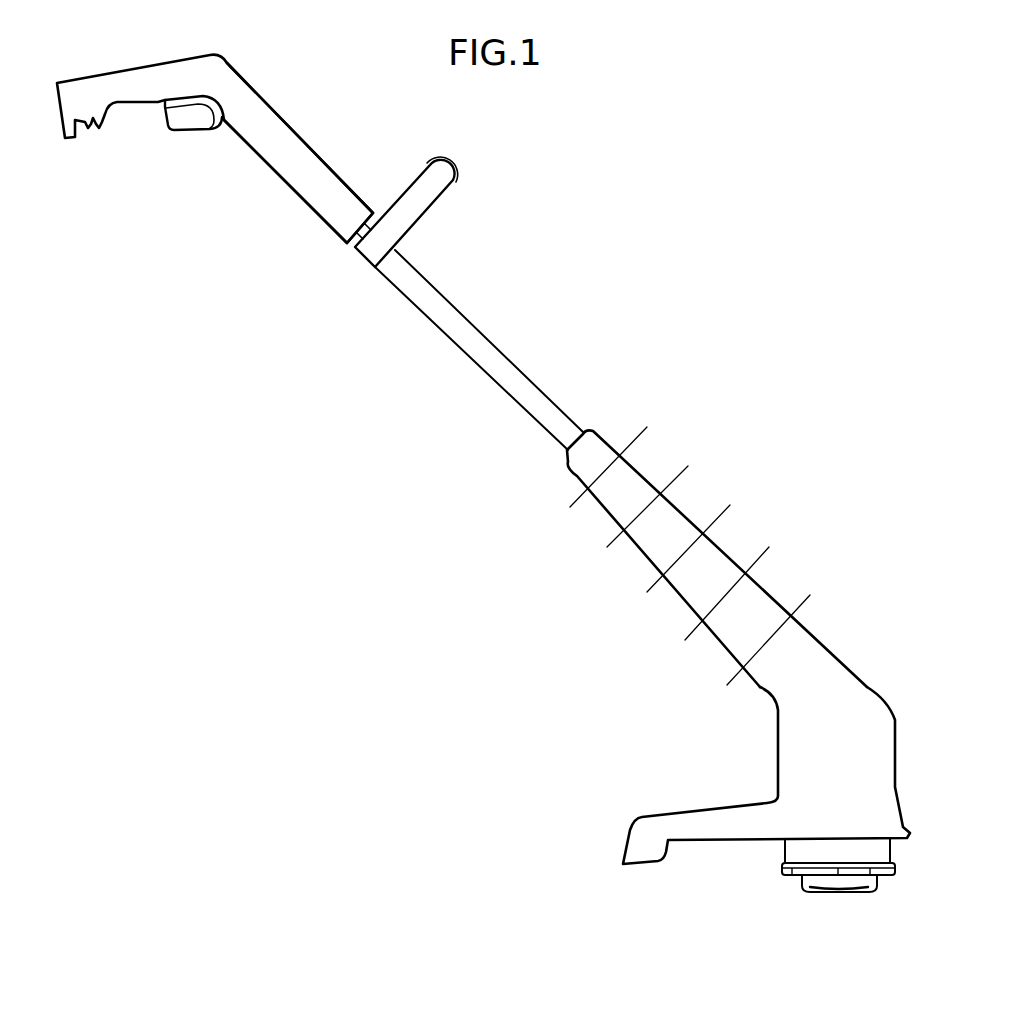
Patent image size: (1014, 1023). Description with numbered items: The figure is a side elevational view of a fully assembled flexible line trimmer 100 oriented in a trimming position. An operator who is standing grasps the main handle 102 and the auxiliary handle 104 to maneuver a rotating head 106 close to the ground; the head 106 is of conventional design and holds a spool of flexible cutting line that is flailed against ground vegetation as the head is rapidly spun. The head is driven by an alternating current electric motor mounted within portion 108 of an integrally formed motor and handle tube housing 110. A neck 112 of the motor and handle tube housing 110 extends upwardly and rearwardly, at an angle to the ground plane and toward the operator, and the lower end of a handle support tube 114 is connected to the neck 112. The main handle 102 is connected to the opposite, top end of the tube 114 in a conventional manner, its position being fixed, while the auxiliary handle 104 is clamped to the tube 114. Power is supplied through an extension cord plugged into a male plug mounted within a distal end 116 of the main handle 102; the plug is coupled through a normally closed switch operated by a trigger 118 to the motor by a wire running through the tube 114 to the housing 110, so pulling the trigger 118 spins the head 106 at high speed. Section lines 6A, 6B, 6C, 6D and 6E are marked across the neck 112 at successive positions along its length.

The flexible line trimmer 100 is at (597, 362).
The main handle 102 is at (240, 73).
The auxiliary handle 104 is at (455, 170).
The rotating head 106 is at (800, 850).
The portion 108 is at (868, 720).
The motor and handle tube housing 110 is at (632, 643).
The neck 112 is at (727, 567).
The handle support tube 114 is at (475, 327).
The distal end 116 is at (54, 96).
The trigger 118 is at (190, 112).
The section line 6A is at (829, 614).
The section line 6B is at (788, 566).
The section line 6C is at (749, 524).
The section line 6D is at (707, 485).
The section line 6E is at (666, 446).